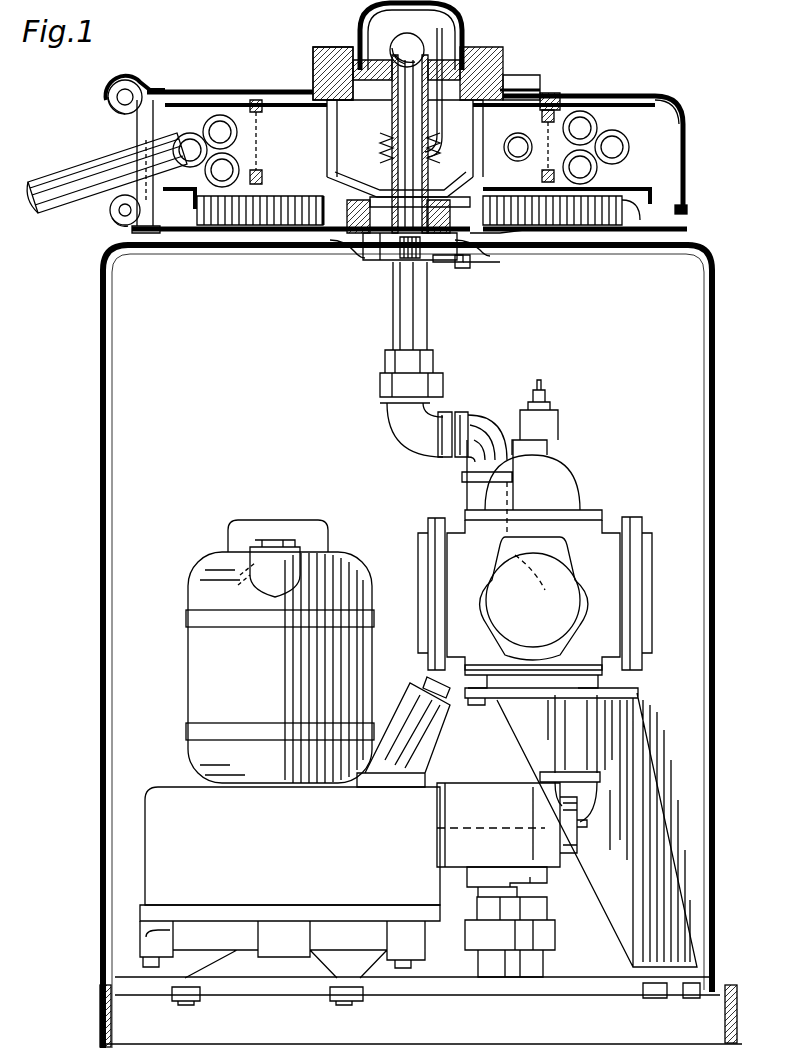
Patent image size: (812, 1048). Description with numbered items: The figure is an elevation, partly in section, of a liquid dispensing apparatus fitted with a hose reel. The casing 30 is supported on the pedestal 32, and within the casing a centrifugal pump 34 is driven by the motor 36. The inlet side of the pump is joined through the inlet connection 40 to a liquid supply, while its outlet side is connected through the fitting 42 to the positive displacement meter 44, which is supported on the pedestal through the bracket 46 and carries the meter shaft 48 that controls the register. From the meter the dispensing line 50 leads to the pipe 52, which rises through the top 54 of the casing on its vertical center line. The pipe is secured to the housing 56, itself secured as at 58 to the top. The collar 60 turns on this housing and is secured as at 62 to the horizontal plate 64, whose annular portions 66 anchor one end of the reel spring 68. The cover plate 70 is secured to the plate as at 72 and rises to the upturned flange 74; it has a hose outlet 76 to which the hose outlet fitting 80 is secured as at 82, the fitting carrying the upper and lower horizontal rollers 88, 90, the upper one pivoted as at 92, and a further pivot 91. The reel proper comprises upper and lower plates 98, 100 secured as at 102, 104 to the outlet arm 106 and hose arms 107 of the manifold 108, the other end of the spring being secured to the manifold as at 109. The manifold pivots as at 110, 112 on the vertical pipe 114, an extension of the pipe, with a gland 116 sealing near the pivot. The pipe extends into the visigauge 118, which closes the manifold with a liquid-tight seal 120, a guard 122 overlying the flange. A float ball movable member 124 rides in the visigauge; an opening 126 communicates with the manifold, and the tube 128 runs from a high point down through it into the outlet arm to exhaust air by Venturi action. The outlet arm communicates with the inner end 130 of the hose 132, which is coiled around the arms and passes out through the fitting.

The casing 30 is at (716, 588).
The pedestal 32 is at (733, 987).
The pump 34 is at (167, 830).
The motor 36 is at (198, 660).
The inlet connection 40 is at (538, 953).
The fitting 42 is at (587, 742).
The meter 44 is at (647, 610).
The bracket 46 is at (640, 787).
The meter shaft 48 is at (538, 402).
The dispensing line 50 is at (397, 422).
The pipe 52 is at (397, 312).
The top 54 is at (530, 245).
The housing 56 is at (462, 273).
The securing means 58 is at (373, 267).
The collar 60 is at (333, 252).
The securing means 62 is at (470, 257).
The plate 64 is at (238, 235).
The annular portions 66 is at (640, 233).
The reel spring 68 is at (602, 233).
The cover plate 70 is at (683, 158).
The securing means 72 is at (687, 208).
The upturned flange 74 is at (540, 85).
The hose outlet 76 is at (143, 123).
The hose outlet fitting 80 is at (135, 82).
The securing means 82 is at (180, 78).
The upper horizontal roller 88 is at (110, 100).
The lower horizontal roller 90 is at (110, 215).
The pin 91 is at (120, 223).
The pivot 92 is at (125, 88).
The upper plate 98 is at (673, 95).
The lower plate 100 is at (657, 187).
The securing means 102 is at (585, 92).
The securing means 104 is at (220, 235).
The outlet arm 106 is at (548, 88).
The hose arms 107 is at (265, 100).
The manifold 108 is at (313, 88).
The securing means 109 is at (277, 235).
The pivot 110 is at (313, 235).
The pivot 112 is at (320, 63).
The vertical pipe 114 is at (433, 92).
The stuffing box or gland 116 is at (380, 152).
The visigauge 118 is at (370, 10).
The liquid-tight seal 120 is at (503, 50).
The guard 122 is at (503, 72).
The movable member 124 is at (388, 50).
The opening 126 is at (457, 53).
The tube 128 is at (433, 24).
The inner end of hose 130 is at (560, 125).
The hose 132 is at (72, 173).